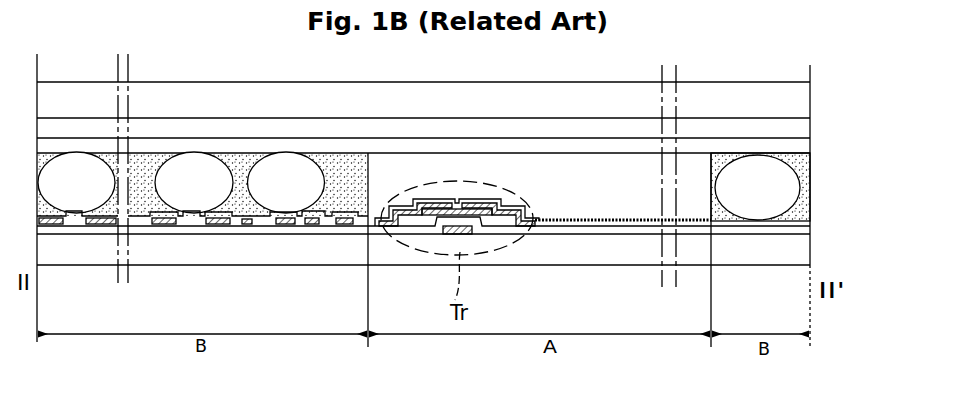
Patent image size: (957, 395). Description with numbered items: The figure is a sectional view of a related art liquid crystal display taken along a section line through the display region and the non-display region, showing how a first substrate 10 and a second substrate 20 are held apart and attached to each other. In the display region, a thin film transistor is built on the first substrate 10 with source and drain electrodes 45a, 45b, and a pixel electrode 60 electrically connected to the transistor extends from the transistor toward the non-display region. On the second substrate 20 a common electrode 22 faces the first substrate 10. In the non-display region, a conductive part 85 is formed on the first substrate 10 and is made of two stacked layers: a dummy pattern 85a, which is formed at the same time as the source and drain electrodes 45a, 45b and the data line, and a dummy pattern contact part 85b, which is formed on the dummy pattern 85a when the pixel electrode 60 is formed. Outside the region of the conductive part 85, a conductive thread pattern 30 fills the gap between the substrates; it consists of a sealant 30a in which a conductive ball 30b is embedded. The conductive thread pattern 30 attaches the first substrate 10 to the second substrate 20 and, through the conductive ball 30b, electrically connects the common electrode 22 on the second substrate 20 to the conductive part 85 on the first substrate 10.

The first substrate 10 is at (805, 250).
The second substrate 20 is at (805, 102).
The common electrode 22 is at (805, 147).
The conductive thread pattern 30 is at (806, 191).
The sealant 30a is at (807, 214).
The conductive ball 30b is at (790, 191).
The source electrode 45a is at (400, 230).
The drain electrode 45b is at (520, 230).
The pixel electrode 60 is at (595, 222).
The conductive part 85 is at (248, 267).
The dummy pattern 85a is at (283, 226).
The dummy pattern contact part 85b is at (315, 226).